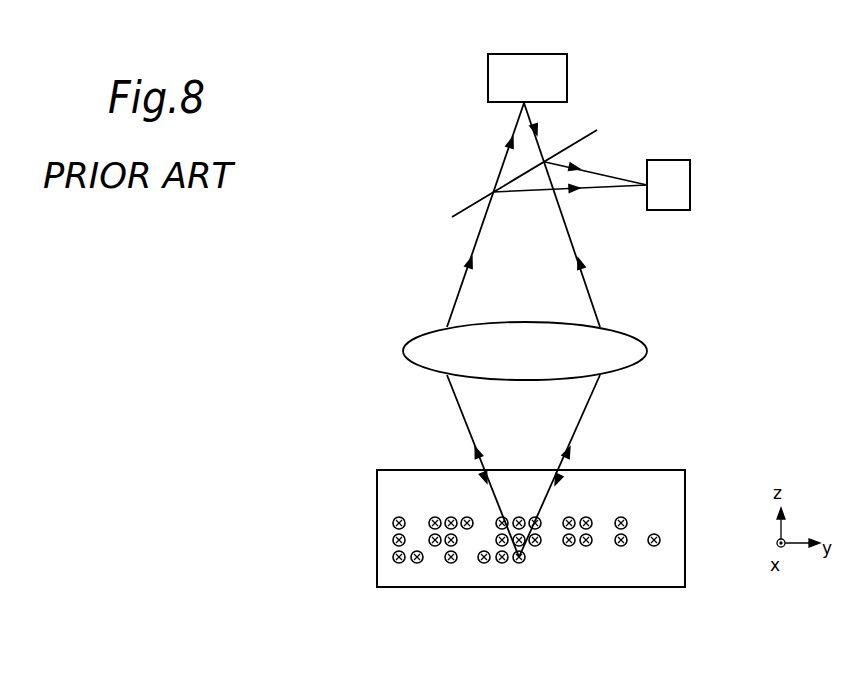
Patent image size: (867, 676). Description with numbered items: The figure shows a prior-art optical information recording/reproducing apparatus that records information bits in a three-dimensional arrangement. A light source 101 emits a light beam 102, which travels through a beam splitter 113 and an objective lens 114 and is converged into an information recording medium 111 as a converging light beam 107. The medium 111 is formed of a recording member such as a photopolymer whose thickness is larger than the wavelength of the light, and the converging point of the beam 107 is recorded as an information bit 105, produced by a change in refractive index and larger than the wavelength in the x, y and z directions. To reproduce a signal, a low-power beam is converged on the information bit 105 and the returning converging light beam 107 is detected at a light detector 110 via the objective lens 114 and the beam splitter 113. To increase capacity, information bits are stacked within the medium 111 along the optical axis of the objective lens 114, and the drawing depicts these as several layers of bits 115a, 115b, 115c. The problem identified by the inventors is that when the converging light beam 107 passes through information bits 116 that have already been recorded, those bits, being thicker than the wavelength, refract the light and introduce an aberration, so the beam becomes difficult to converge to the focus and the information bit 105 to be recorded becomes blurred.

The light source 101 is at (548, 73).
The light beam 102 is at (537, 232).
The beam splitter 113 is at (493, 192).
The light detector 110 is at (675, 188).
The objective lens 114 is at (630, 350).
The converging light beam 107 is at (547, 423).
The information recording medium 111 is at (672, 485).
The first row of marks 115a is at (390, 522).
The second row of marks 115b is at (390, 539).
The third row of marks 115c is at (390, 557).
The information bits already recorded 116 is at (523, 520).
The information bit 105 is at (521, 561).